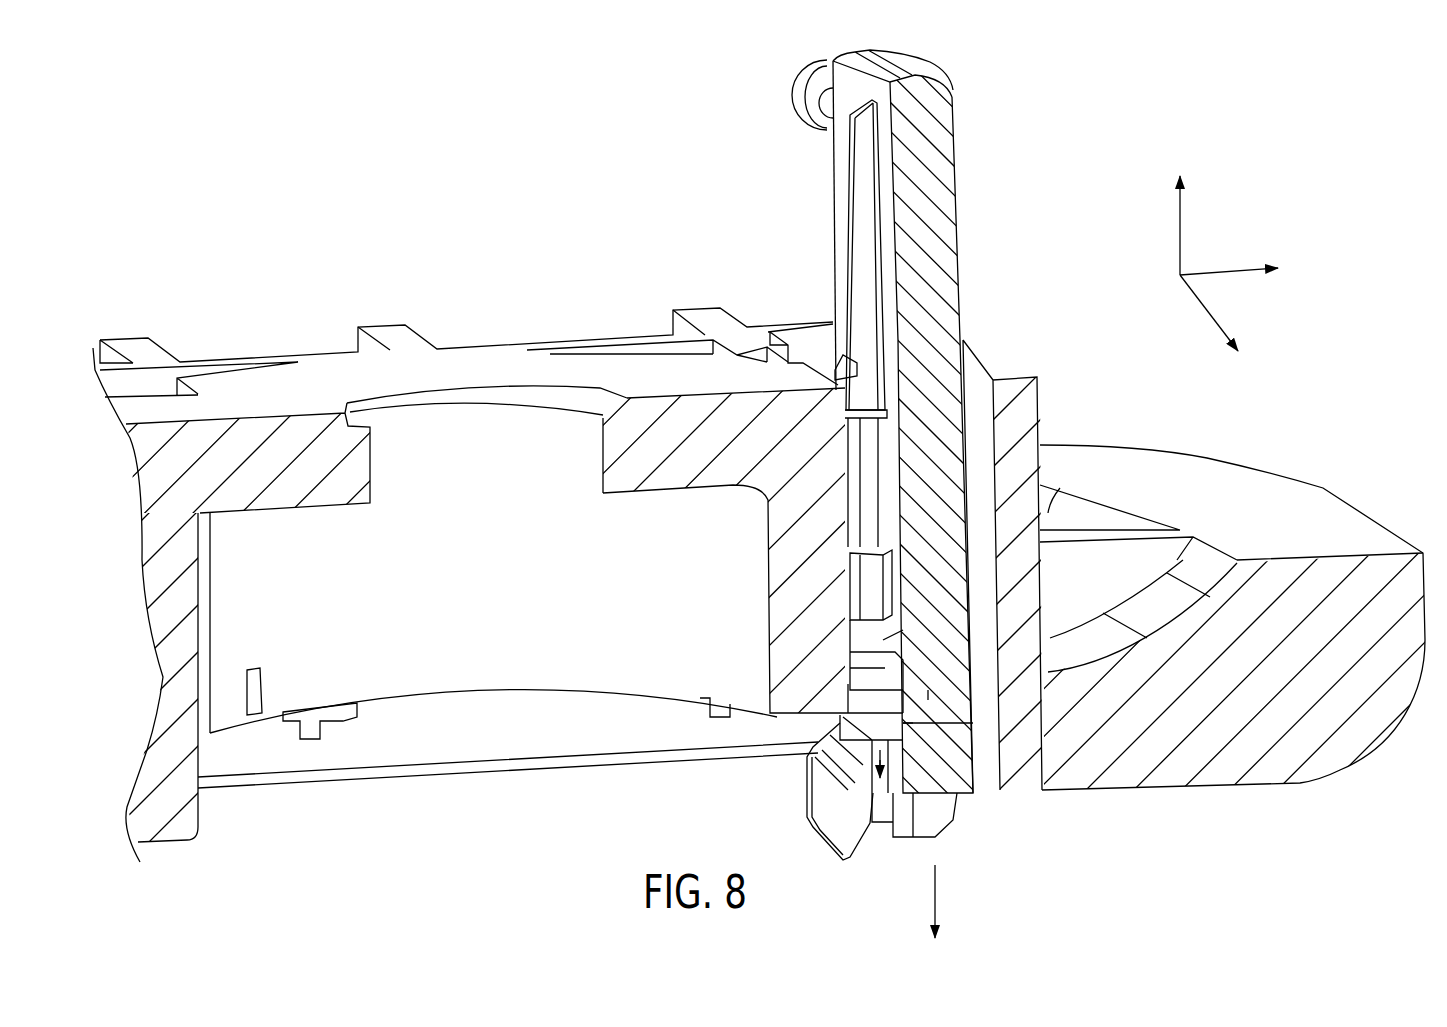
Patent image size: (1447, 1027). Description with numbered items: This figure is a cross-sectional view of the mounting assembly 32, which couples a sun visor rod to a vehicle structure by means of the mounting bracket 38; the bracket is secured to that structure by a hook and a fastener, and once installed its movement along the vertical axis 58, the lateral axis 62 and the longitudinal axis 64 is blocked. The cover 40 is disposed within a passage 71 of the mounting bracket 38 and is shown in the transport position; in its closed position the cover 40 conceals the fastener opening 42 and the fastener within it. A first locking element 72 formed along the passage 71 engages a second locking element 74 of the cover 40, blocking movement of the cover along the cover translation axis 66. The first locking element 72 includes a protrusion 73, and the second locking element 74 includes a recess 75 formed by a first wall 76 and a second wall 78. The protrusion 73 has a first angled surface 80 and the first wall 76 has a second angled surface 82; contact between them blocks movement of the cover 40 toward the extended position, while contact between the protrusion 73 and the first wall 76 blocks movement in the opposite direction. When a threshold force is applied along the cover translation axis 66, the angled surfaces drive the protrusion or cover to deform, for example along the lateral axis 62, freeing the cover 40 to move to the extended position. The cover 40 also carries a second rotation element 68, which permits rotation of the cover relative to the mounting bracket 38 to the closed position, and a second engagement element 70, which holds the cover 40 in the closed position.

The mounting assembly 32 is at (578, 132).
The mounting bracket 38 is at (1383, 735).
The cover 40 is at (950, 203).
The fastener opening 42 is at (532, 795).
The vertical axis 58 is at (1183, 228).
The lateral axis 62 is at (1222, 273).
The longitudinal axis 64 is at (1205, 308).
The cover translation axis 66 is at (933, 895).
The second rotation element 68 is at (802, 70).
The second engagement element 70 is at (848, 853).
The passage 71 is at (801, 310).
The first locking element 72 is at (845, 684).
The protrusion 73 is at (872, 686).
The second locking element 74 is at (930, 696).
The recess 75 is at (913, 724).
The first wall 76 is at (883, 640).
The second wall 78 is at (880, 755).
The first angled surface 80 is at (885, 640).
The second angled surface 82 is at (895, 650).